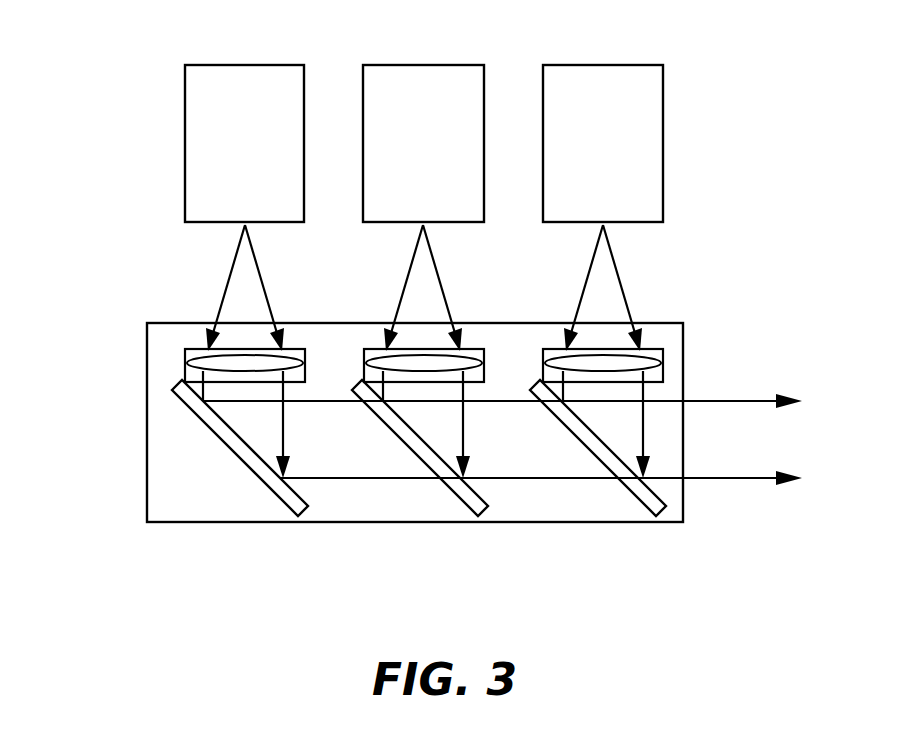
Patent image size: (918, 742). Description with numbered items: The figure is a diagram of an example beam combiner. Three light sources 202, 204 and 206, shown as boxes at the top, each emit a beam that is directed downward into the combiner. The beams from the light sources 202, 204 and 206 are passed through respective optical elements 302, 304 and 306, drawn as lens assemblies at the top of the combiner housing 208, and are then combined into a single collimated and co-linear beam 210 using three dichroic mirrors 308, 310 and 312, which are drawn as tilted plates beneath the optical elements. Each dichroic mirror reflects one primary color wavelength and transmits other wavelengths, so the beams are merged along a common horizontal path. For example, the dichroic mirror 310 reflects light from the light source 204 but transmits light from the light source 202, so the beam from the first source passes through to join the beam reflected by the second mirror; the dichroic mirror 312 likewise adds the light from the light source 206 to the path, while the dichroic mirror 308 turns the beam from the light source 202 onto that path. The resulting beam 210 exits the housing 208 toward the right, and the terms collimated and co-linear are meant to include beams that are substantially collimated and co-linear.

The light source 202 is at (244, 64).
The light source 204 is at (422, 64).
The light source 206 is at (602, 64).
The beam combiner housing 208 is at (147, 462).
The collimated and co-linear beam 210 is at (745, 401).
The optical element 302 is at (195, 349).
The optical element 304 is at (373, 349).
The optical element 306 is at (553, 349).
The dichroic mirror 308 is at (285, 505).
The dichroic mirror 310 is at (463, 506).
The dichroic mirror 312 is at (646, 500).